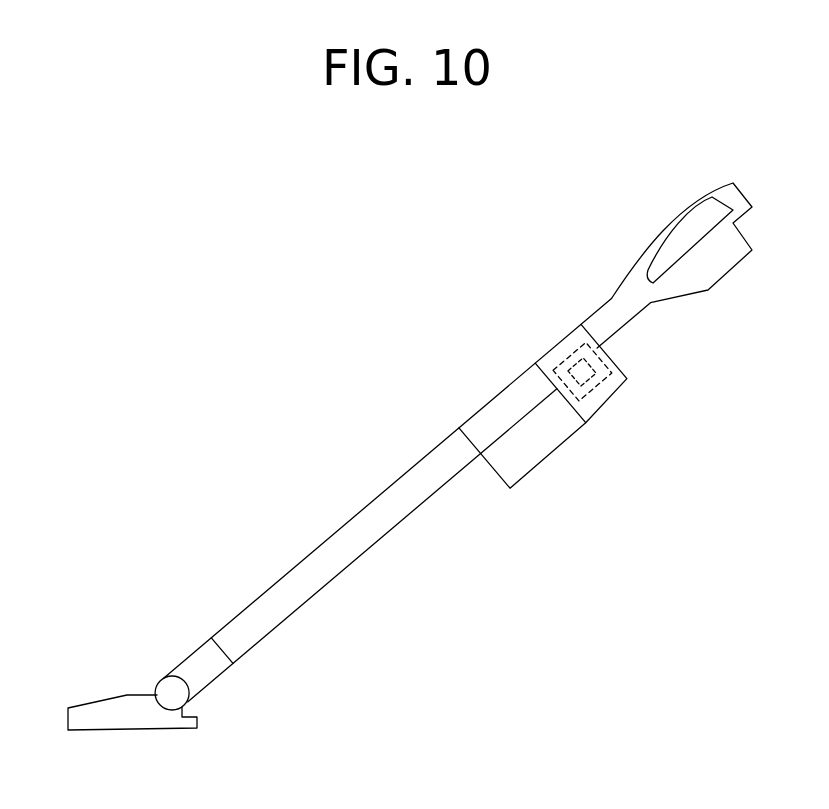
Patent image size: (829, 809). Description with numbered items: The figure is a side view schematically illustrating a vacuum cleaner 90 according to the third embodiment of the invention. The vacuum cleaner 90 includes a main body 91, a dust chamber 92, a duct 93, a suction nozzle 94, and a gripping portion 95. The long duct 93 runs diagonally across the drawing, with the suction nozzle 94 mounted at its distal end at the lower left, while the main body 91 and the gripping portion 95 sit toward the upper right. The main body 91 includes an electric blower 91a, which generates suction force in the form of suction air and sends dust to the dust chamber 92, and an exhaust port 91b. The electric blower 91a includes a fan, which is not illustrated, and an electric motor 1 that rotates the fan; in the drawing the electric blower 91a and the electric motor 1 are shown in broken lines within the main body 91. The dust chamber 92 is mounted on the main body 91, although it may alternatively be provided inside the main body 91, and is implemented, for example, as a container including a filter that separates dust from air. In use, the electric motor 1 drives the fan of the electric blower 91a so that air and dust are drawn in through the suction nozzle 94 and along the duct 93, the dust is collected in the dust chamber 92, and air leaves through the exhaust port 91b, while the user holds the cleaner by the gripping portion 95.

The electric motor 1 is at (572, 362).
The vacuum cleaner 90 is at (433, 320).
The main body 91 is at (711, 357).
The electric blower 91a is at (597, 388).
The exhaust port 91b is at (609, 357).
The dust chamber 92 is at (537, 445).
The duct 93 is at (348, 540).
The suction nozzle 94 is at (107, 715).
The gripping portion 95 is at (670, 213).